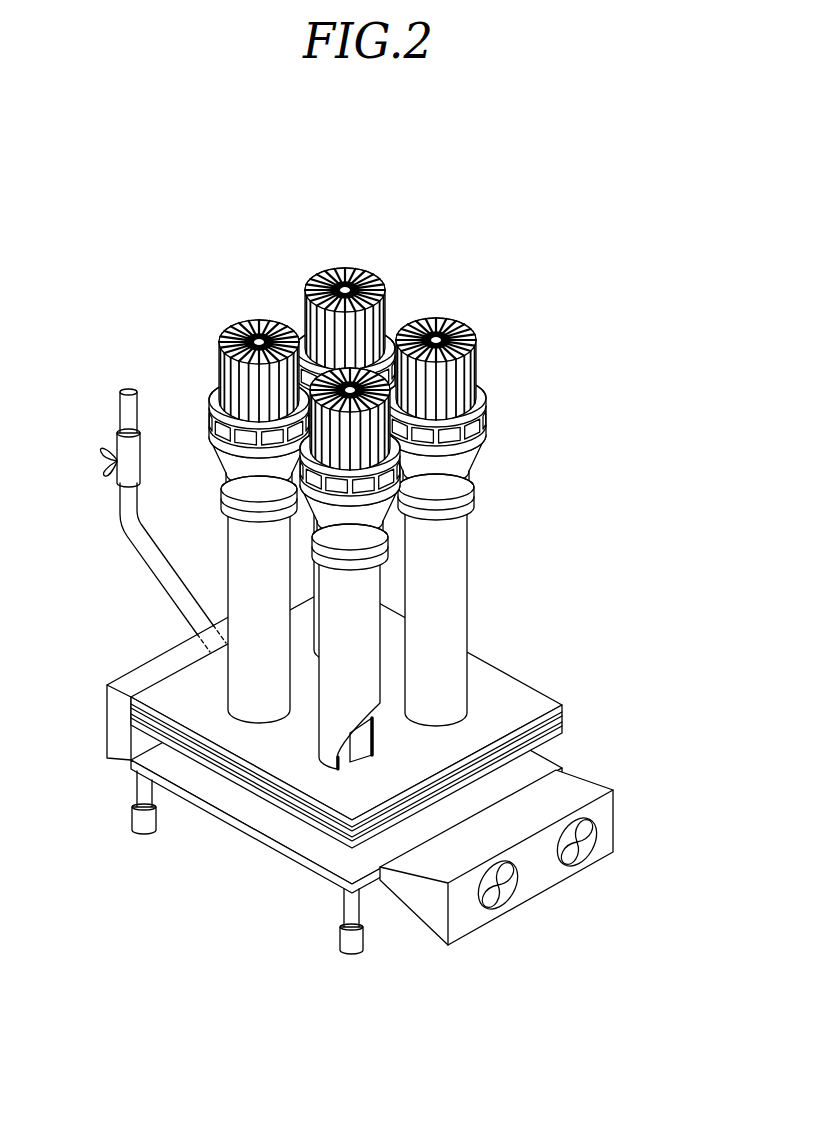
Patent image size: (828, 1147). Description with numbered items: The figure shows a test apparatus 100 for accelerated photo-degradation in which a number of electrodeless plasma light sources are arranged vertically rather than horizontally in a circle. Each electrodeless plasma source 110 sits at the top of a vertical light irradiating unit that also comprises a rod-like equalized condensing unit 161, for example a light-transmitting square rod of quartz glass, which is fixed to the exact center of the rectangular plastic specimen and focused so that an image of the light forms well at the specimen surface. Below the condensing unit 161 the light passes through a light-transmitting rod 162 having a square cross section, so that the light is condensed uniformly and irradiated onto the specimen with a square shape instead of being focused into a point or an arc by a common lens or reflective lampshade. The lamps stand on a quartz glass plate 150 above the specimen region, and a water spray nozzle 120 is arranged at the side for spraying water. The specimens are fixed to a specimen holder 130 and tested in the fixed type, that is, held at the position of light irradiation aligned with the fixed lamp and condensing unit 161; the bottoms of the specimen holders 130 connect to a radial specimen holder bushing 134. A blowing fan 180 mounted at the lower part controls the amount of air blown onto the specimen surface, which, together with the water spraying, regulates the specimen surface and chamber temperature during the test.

The test apparatus 100 is at (356, 577).
The electrodeless plasma source 110 is at (333, 270).
The water spray nozzle 120 is at (137, 551).
The specimen holder 130 is at (204, 809).
The specimen holder bushing 134 is at (339, 937).
The quartz glass plate 150 is at (172, 698).
The condensing unit 161 is at (478, 455).
The light-transmitting rod 162 is at (363, 737).
The blowing fan 180 is at (107, 729).